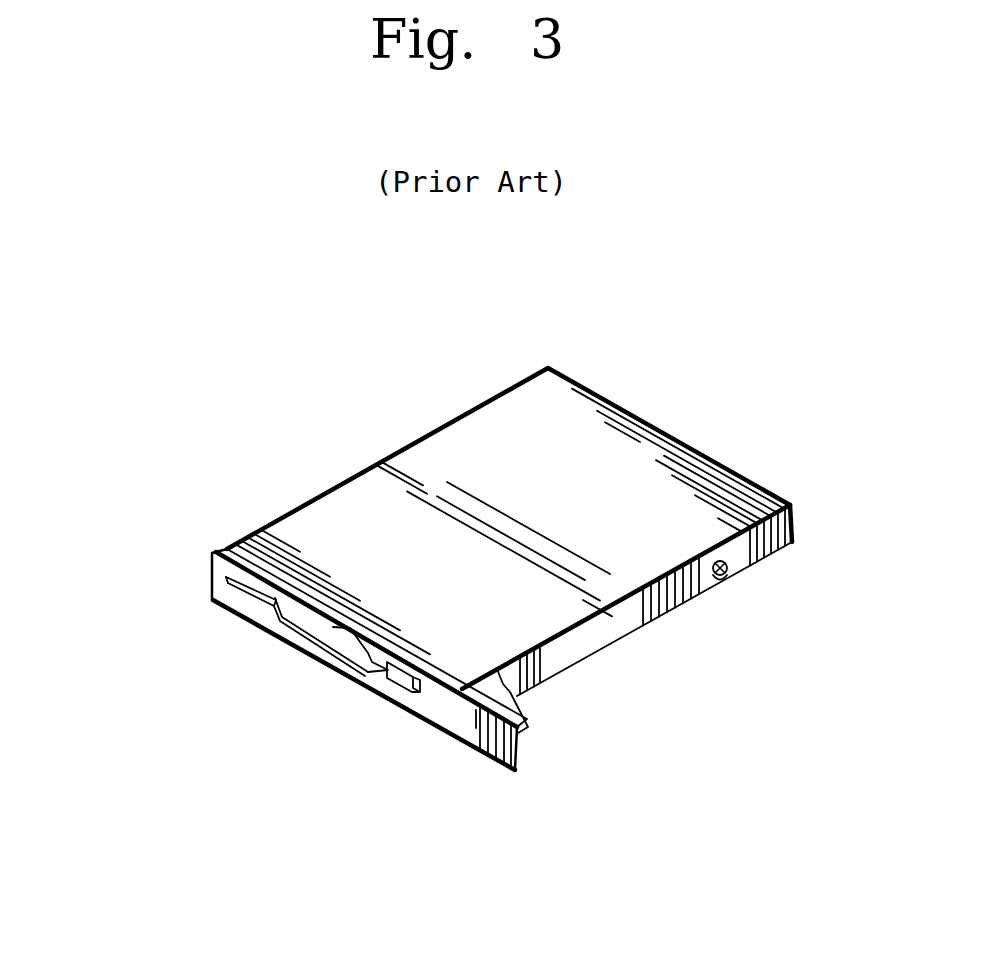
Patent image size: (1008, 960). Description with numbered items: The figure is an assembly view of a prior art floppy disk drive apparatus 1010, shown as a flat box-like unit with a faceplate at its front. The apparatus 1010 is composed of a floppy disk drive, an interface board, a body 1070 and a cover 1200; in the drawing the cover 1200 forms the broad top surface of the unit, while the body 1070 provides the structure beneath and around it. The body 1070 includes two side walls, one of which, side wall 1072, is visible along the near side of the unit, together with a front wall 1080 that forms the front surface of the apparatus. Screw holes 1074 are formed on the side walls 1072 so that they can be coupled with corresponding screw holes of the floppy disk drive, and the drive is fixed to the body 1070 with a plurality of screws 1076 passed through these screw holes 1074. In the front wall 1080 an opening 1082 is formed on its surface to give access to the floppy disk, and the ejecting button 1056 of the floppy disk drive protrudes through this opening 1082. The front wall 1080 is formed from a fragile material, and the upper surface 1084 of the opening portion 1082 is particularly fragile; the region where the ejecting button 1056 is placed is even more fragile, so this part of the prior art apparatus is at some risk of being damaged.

The floppy disk drive apparatus 1010 is at (440, 339).
The cover 1200 is at (332, 512).
The body 1070 is at (205, 585).
The side wall 1072 is at (597, 635).
The screw hole 1074 is at (719, 582).
The screw 1076 is at (728, 568).
The front wall 1080 is at (473, 723).
The opening 1082 is at (303, 622).
The upper surface of the opening portion 1084 is at (347, 628).
The ejecting button 1056 is at (392, 678).